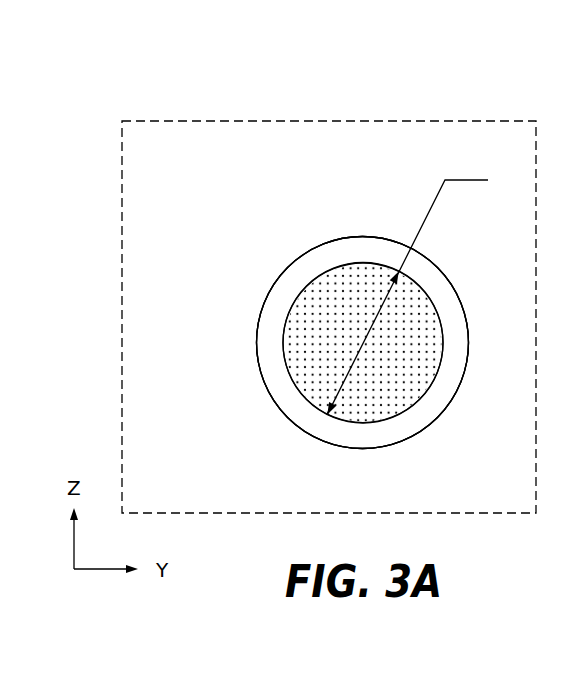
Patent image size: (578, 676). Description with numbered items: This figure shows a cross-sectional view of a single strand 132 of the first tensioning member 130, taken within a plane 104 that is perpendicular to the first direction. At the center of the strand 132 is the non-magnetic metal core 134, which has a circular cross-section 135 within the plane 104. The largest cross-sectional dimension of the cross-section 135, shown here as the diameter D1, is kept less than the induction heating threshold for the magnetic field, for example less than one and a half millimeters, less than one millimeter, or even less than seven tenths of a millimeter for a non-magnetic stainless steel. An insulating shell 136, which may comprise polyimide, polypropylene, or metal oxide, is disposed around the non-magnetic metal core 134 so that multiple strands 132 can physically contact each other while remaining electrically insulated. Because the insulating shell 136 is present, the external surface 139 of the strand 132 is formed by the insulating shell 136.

The plane 104 is at (200, 121).
The first tensioning member 130 is at (177, 666).
The strand 132 is at (241, 265).
The non-magnetic metal core 134 is at (313, 380).
The cross-section 135 is at (310, 407).
The insulating shell 136 is at (275, 337).
The external surface 139 is at (327, 242).
The diameter D1 is at (407, 281).